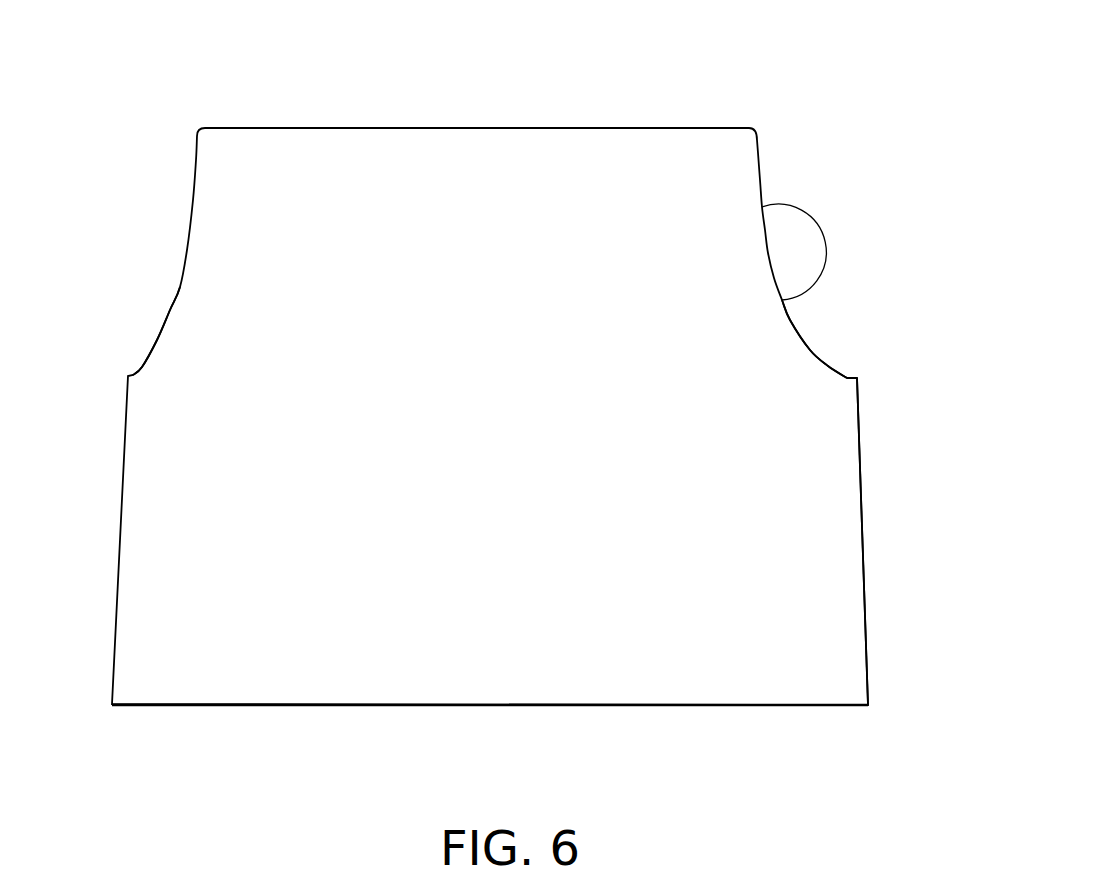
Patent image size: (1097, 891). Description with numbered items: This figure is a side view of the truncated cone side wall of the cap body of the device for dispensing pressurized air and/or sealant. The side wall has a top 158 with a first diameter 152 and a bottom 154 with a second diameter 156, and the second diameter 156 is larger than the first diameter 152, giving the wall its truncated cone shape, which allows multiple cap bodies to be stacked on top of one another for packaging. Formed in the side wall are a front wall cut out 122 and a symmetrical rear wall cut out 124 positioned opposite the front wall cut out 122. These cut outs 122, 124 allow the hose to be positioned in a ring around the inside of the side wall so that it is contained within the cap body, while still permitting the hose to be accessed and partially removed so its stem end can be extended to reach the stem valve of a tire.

The front wall cut out 122 is at (170, 312).
The rear wall cut out 124 is at (808, 352).
The first diameter 152 is at (503, 128).
The bottom 154 is at (797, 655).
The second diameter 156 is at (605, 706).
The top 158 is at (673, 191).